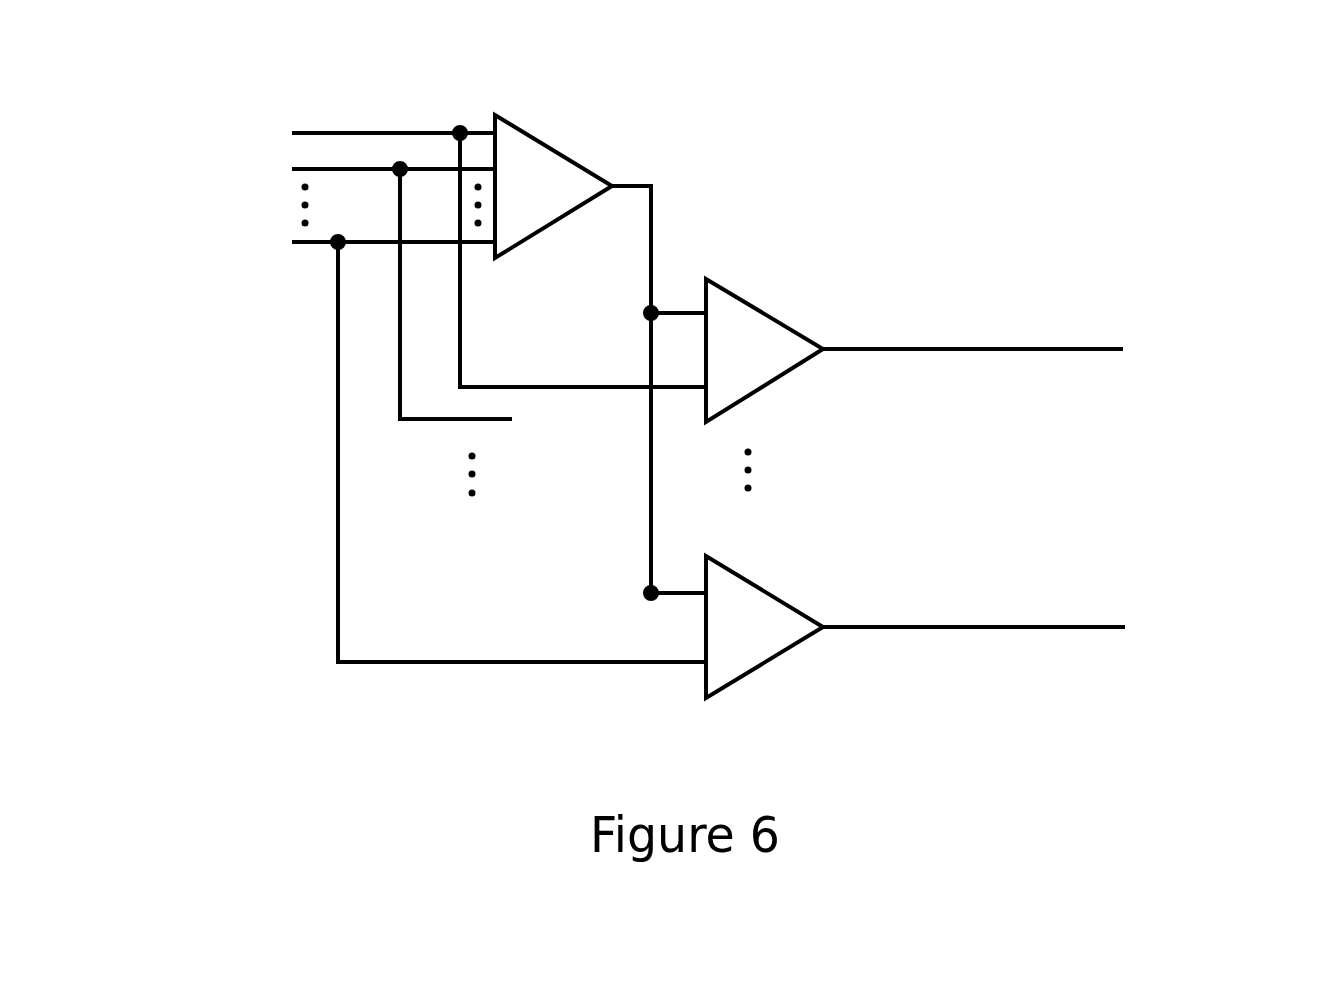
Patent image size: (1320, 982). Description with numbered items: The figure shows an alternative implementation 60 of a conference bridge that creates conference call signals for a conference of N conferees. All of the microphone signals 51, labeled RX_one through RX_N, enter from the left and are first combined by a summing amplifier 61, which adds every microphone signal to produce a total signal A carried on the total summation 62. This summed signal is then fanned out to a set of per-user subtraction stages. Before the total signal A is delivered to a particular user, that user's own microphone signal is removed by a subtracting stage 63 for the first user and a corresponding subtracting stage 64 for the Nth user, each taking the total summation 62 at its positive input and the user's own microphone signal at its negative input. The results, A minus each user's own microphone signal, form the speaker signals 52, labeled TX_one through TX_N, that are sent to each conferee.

The microphone signals 51 is at (148, 194).
The speaker signals 52 is at (1238, 420).
The alternative implementation of a conference bridge 60 is at (855, 380).
The summing 61 is at (553, 152).
The total summation 62 is at (655, 247).
The subtracting 63 is at (765, 312).
The subtracting 64 is at (765, 590).